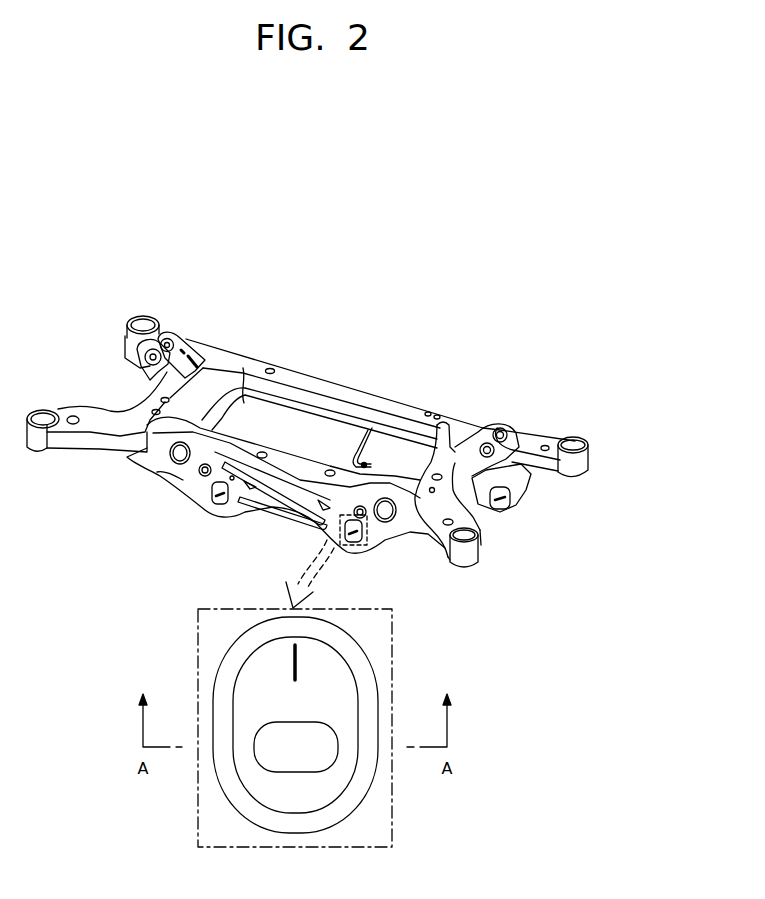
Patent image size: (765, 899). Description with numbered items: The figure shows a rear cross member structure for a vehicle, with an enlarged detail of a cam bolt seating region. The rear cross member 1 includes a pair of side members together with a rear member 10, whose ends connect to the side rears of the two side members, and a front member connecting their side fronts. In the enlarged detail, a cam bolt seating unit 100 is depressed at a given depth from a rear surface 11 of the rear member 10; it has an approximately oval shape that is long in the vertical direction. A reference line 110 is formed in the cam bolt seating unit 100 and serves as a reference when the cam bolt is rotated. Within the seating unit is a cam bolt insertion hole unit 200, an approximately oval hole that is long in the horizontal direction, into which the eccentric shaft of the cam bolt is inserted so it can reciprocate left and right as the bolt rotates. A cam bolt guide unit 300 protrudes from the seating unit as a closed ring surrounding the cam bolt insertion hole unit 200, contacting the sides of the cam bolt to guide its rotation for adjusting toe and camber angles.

The rear cross member 1 is at (368, 347).
The rear member 10 is at (158, 458).
The rear surface 11 is at (375, 632).
The cam bolt seating unit 100 is at (335, 690).
The reference line 110 is at (292, 665).
The cam bolt insertion hole unit 200 is at (295, 773).
The cam bolt guide unit 300 is at (348, 657).